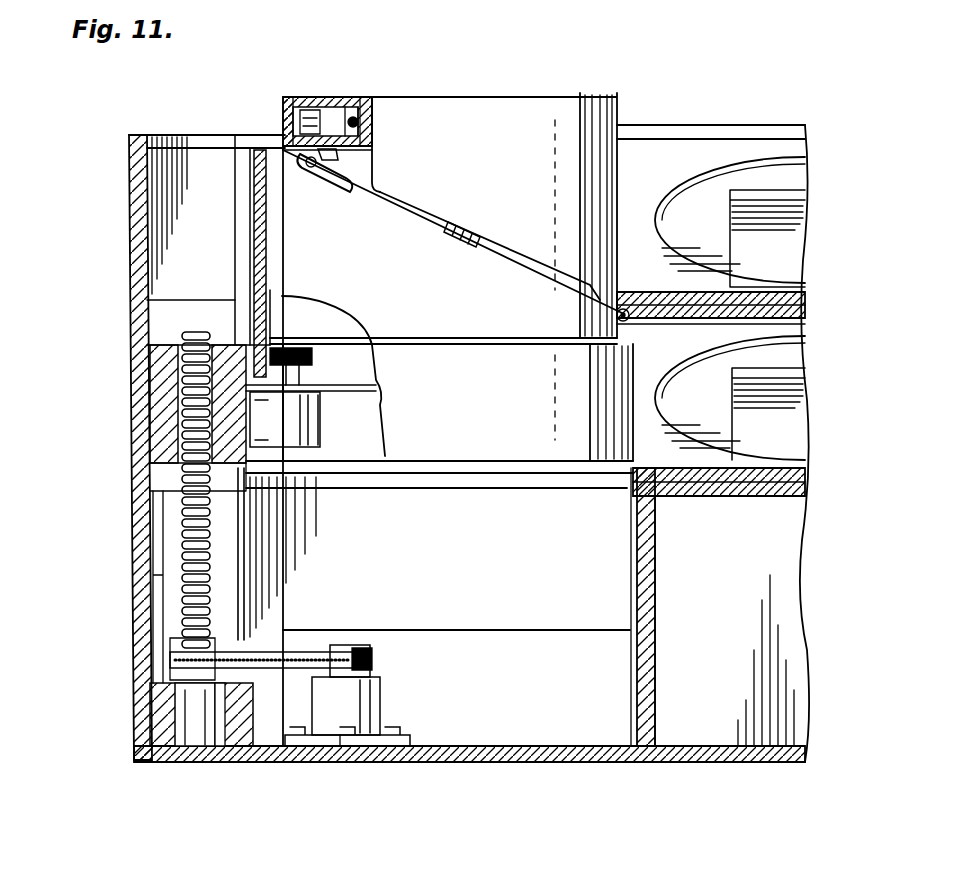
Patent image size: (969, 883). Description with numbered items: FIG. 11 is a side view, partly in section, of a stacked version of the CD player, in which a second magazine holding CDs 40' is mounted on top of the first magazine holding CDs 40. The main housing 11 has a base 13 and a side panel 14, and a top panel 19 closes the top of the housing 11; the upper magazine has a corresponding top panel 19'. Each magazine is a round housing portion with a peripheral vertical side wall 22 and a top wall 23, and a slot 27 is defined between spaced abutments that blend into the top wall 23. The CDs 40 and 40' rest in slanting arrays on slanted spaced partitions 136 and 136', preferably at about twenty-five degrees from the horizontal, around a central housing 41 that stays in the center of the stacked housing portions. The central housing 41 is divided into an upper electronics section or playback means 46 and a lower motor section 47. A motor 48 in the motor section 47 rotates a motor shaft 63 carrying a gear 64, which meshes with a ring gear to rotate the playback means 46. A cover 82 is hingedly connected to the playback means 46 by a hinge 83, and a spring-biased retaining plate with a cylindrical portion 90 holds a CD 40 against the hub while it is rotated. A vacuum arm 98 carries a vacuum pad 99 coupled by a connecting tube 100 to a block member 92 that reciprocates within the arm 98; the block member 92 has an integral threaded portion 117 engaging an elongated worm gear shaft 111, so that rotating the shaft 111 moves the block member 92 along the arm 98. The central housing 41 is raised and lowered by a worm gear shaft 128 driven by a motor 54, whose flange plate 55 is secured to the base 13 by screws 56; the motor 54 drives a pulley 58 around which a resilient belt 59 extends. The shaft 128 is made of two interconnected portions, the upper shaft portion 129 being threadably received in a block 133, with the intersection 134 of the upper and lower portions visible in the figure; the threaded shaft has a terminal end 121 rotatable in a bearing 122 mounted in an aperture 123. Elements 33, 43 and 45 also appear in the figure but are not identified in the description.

The main housing 11 is at (780, 757).
The base 13 is at (600, 750).
The side panel 14 is at (775, 613).
The top panel 19 is at (746, 462).
The top panel 19' is at (743, 274).
The peripheral vertical side wall 22 is at (126, 445).
The top wall 23 is at (806, 325).
The slot 27 is at (160, 575).
The cross member 33 is at (790, 495).
The audio CD 40 is at (725, 392).
The CD 40' is at (750, 166).
The central housing 41 is at (480, 95).
The vertical partition 43 is at (640, 690).
The partition wall 45 is at (640, 620).
The playback means 46 is at (248, 185).
The lower motor section 47 is at (522, 463).
The motor 48 is at (322, 448).
The motor 54 is at (372, 698).
The flange plate 55 is at (398, 744).
The screws 56 is at (345, 737).
The pulley 58 is at (345, 642).
The resilient belt 59 is at (374, 660).
The motor shaft 63 is at (378, 392).
The gear 64 is at (302, 352).
The cover 82 is at (632, 95).
The hinge 83 is at (626, 308).
The cylindrical portion 90 is at (448, 222).
The block member 92 is at (318, 98).
The vacuum arm 98 is at (283, 108).
The vacuum pad 99 is at (318, 182).
The connecting tube 100 is at (342, 155).
The elongated worm gear shaft 111 is at (360, 122).
The threaded portion 117 is at (356, 97).
The terminal end 121 is at (195, 713).
The bearing 122 is at (182, 762).
The aperture 123 is at (232, 760).
The worm gear shaft 128 is at (178, 625).
The upper shaft portion 129 is at (185, 325).
The block 133 is at (162, 380).
The intersection 134 is at (198, 520).
The slanted spaced partitions 136 is at (802, 414).
The slanted spaced partitions 136' is at (804, 221).